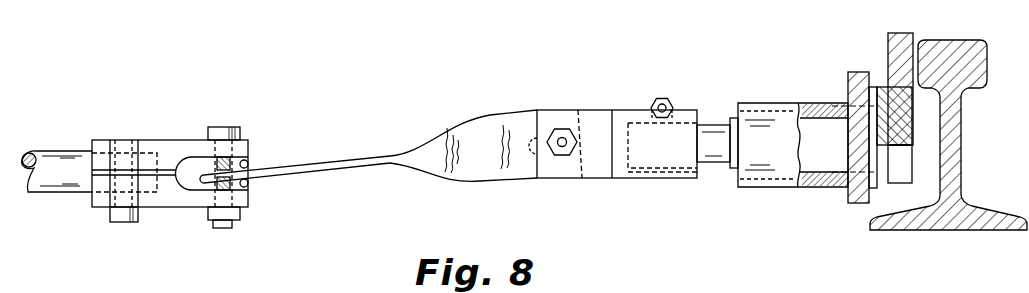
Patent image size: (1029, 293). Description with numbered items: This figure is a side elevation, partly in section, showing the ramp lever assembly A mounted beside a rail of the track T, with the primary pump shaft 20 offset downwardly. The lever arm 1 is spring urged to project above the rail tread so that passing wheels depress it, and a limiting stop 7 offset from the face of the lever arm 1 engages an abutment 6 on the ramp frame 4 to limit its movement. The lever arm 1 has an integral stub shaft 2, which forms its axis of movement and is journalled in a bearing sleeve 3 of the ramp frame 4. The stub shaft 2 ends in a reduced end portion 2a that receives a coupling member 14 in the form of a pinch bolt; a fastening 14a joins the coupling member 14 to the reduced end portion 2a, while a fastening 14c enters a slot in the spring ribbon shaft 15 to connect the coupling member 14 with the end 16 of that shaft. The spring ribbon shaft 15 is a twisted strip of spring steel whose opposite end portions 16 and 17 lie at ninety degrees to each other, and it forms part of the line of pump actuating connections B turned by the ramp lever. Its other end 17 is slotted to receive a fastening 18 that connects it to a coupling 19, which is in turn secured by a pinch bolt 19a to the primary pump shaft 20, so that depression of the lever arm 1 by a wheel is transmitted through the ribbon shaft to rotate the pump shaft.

The lever arm 1 is at (906, 33).
The stub shaft 2 is at (810, 125).
The reduced end portion 2a is at (712, 124).
The bearing sleeve 3 is at (803, 191).
The ramp frame 4 is at (850, 203).
The abutment 6 is at (851, 72).
The limiting stop 7 is at (882, 96).
The coupling member 14 is at (620, 110).
The fastening 14a is at (663, 97).
The fastening 14c is at (558, 128).
The spring ribbon shaft 15 is at (440, 133).
The end of ribbon shaft 16 is at (496, 184).
The end of ribbon shaft 17 is at (312, 165).
The fastening 18 is at (228, 127).
The coupling 19 is at (163, 140).
The pinch bolt 19a is at (125, 222).
The primary pump shaft 20 is at (46, 150).
The ramp lever A is at (888, 50).
The pump actuating connections B is at (478, 117).
The track T is at (990, 56).